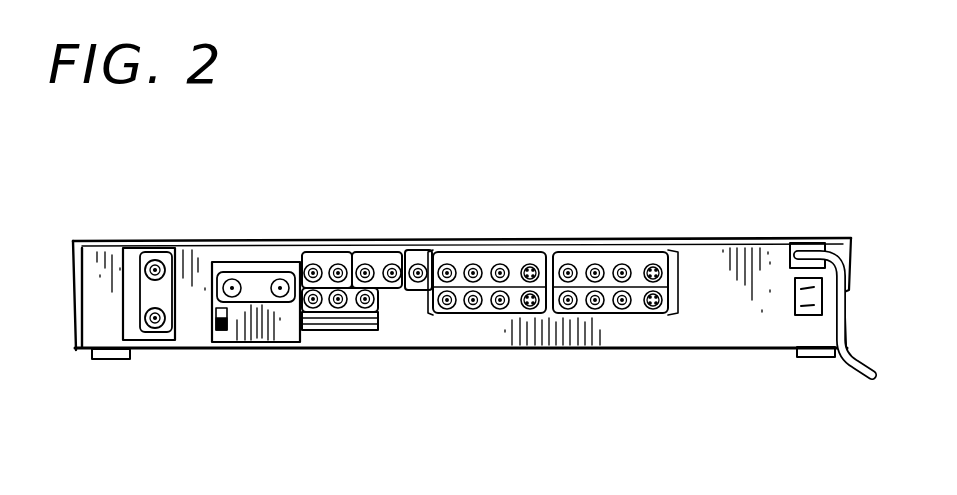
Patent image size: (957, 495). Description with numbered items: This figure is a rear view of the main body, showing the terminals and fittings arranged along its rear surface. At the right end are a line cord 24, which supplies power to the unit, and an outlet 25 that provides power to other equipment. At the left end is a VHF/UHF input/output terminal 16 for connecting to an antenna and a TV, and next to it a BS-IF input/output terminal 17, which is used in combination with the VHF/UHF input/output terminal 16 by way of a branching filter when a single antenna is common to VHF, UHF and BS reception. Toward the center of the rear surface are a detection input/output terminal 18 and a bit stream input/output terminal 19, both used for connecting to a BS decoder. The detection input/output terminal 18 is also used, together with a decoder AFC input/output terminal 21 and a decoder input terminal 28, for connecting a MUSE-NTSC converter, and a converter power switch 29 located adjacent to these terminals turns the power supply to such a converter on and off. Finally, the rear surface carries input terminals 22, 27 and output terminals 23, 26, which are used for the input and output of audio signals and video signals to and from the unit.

The VHF/UHF input/output terminal 16 is at (155, 248).
The BS-IF input/output terminal 17 is at (252, 270).
The detection input/output terminal 18 is at (317, 256).
The bit stream input/output terminal 19 is at (371, 254).
The decoder AFC input/output terminal 21 is at (423, 255).
The input terminal 22 is at (491, 255).
The output terminal 23 is at (588, 255).
The line cord 24 is at (797, 240).
The outlet 25 is at (797, 292).
The output terminal 26 is at (607, 315).
The input terminal 27 is at (490, 315).
The decoder input terminal 28 is at (340, 312).
The converter power switch 29 is at (222, 330).